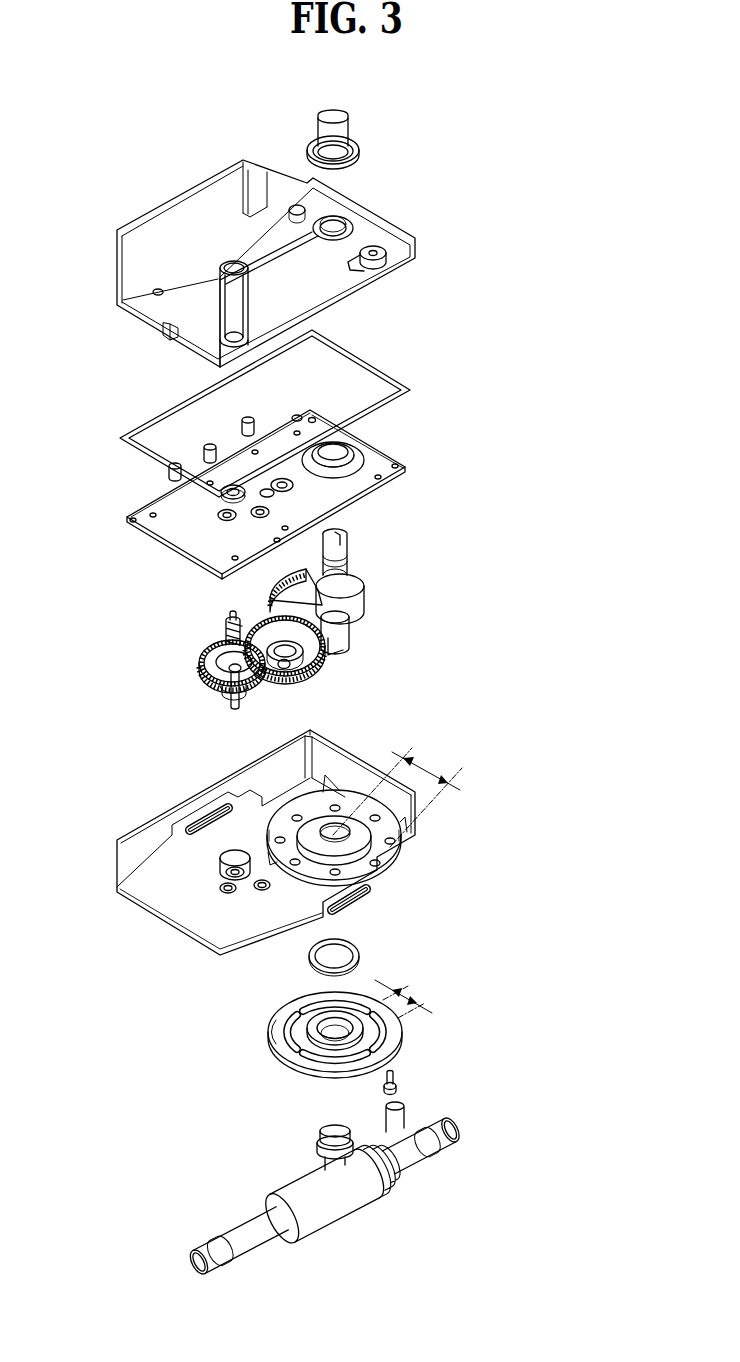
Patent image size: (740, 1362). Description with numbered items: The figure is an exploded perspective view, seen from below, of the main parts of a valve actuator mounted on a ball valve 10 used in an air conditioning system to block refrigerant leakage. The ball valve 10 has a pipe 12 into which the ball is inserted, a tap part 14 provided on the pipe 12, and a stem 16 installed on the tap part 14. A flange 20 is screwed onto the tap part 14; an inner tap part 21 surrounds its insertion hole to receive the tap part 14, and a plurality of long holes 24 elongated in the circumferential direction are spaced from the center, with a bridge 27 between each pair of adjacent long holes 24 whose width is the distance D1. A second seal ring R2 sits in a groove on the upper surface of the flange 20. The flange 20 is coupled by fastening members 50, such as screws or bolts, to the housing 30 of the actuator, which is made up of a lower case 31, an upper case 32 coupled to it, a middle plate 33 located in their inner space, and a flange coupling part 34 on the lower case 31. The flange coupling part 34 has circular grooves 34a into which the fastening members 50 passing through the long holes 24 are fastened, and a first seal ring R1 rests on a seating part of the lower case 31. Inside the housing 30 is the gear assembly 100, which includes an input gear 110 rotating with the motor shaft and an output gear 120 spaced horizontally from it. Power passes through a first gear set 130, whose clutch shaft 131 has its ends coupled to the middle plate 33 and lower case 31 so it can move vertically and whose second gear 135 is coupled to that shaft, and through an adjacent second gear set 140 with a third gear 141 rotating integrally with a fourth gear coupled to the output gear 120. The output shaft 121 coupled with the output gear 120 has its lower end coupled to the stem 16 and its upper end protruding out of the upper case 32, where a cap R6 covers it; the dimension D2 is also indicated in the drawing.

The ball valve 10 is at (338, 1222).
The pipe 12 is at (322, 1220).
The tap part 14 is at (318, 1142).
The stem 16 is at (332, 1127).
The flange 20 is at (347, 1036).
The tap part 21 is at (319, 1044).
The long holes 24 is at (271, 1032).
The bridge 27 is at (293, 1010).
The housing 30 is at (349, 557).
The lower case 31 is at (122, 858).
The upper case 32 is at (122, 258).
The middle plate 33 is at (125, 518).
The flange coupling part 34 is at (366, 835).
The circular grooves 34a is at (400, 848).
The fastening members 50 is at (405, 1075).
The gear assembly 100 is at (291, 627).
The input gear 110 is at (228, 693).
The output gear 120 is at (288, 603).
The output shaft 121 is at (343, 549).
The first gear set 130 is at (215, 668).
The clutch shaft 131 is at (241, 697).
The second gear 135 is at (201, 656).
The second gear set 140 is at (317, 663).
The third gear 141 is at (308, 660).
The first seal ring R1 is at (120, 440).
The second seal ring R2 is at (359, 950).
The cap R6 is at (350, 127).
The distance between adjacent long holes D1 is at (403, 992).
The thickness dimension D2 is at (397, 797).